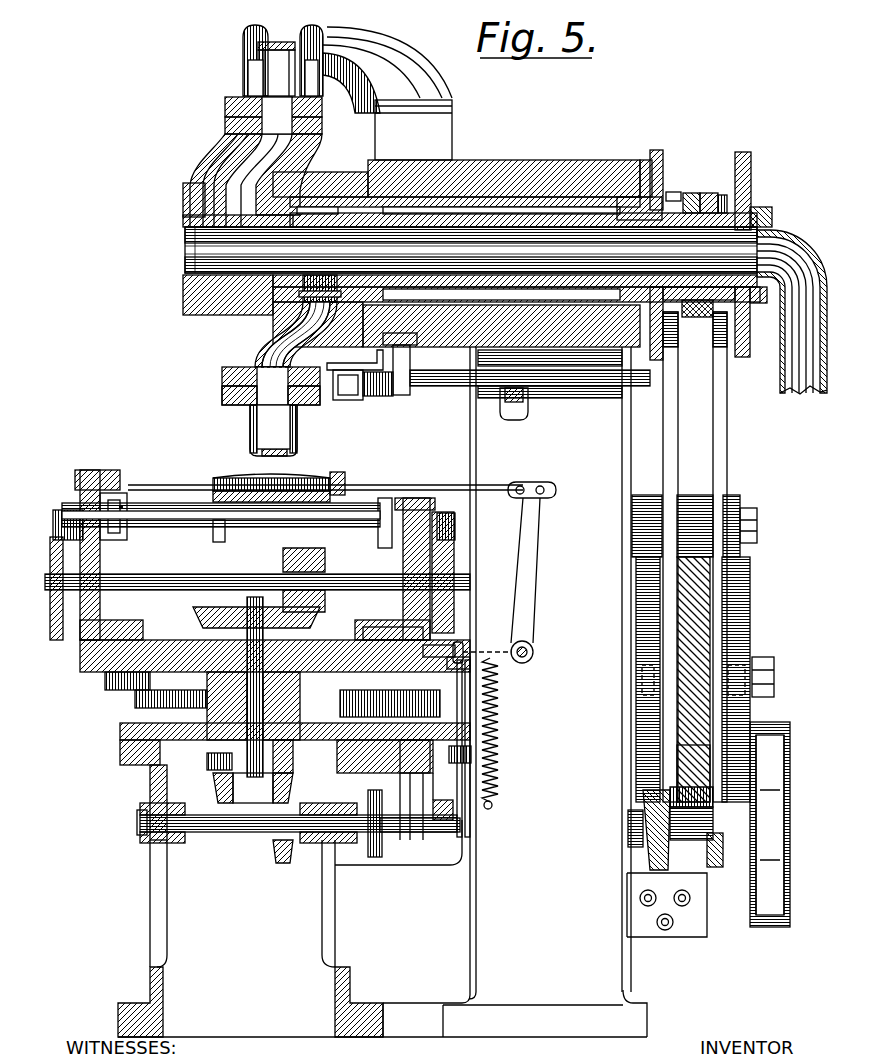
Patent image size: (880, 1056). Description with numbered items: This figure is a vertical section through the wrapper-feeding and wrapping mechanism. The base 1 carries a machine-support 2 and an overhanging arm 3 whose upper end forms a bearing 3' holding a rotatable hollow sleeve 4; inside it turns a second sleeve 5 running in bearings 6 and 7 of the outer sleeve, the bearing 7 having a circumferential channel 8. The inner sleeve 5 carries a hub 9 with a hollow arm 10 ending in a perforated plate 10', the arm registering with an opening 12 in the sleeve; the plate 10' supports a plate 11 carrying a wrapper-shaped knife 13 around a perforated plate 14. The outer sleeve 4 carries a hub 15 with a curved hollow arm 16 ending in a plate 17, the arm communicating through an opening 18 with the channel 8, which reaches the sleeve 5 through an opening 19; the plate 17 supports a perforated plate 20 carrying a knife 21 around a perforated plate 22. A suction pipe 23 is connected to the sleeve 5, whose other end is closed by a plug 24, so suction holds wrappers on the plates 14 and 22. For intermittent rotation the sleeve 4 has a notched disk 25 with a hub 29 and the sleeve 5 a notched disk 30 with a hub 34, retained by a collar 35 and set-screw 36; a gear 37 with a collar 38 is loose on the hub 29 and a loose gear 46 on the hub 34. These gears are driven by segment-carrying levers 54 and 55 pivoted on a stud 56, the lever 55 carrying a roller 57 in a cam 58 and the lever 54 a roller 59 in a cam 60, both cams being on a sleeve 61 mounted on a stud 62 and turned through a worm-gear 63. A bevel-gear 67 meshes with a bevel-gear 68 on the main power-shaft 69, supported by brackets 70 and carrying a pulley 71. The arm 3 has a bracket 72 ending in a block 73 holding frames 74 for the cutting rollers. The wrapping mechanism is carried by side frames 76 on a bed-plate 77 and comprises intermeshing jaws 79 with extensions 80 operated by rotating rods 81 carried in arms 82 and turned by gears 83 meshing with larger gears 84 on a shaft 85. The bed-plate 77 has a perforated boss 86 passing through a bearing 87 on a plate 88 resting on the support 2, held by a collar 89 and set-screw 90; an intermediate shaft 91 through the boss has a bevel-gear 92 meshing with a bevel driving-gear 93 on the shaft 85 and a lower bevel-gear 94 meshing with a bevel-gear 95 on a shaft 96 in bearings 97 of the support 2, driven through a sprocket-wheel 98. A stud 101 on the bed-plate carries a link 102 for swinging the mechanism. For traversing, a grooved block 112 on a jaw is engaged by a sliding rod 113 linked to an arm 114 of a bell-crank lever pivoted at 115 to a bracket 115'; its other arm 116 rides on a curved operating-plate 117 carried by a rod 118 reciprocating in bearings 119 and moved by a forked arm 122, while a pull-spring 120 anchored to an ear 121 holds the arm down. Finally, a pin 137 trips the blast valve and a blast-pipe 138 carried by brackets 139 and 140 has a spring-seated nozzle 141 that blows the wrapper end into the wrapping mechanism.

The base 1 is at (382, 692).
The machine-support 2 is at (150, 783).
The overhanging arm 3 is at (509, 648).
The bearing 3' is at (504, 157).
The hollow sleeve 4 is at (457, 198).
The second sleeve 5 is at (553, 215).
The bearing 6 is at (635, 197).
The bearing 7 is at (365, 207).
The circumferential groove or channel 8 is at (330, 209).
The hub 9 is at (183, 200).
The hollow arm 10 is at (242, 162).
The perforated plate 10' is at (245, 112).
The plate 11 is at (240, 100).
The opening 12 is at (183, 222).
The knife 13 is at (258, 60).
The perforated plate 14 is at (279, 42).
The hub 15 is at (323, 173).
The curved hollow arm 16 is at (270, 343).
The plate 17 is at (222, 375).
The opening 18 is at (296, 334).
The opening 19 is at (320, 282).
The perforated plate 20 is at (248, 402).
The knife 21 is at (297, 434).
The perforated plate 22 is at (273, 427).
The pipe 23 is at (793, 394).
The plug 24 is at (185, 254).
The notched disk 25 is at (663, 163).
The hub 29 is at (690, 317).
The notched disk 30 is at (745, 152).
The hub 34 is at (724, 195).
The collar 35 is at (768, 210).
The set-screw 36 is at (755, 303).
The gear 37 is at (674, 192).
The collar 38 is at (692, 193).
The loose gear 46 is at (719, 195).
The segment-carrying lever 54 is at (668, 422).
The segment-carrying lever 55 is at (724, 426).
The stud 56 is at (758, 529).
The roller 57 is at (748, 664).
The cam 58 is at (745, 618).
The roller 59 is at (640, 685).
The cam 60 is at (640, 632).
The sleeve 61 is at (670, 710).
The stud 62 is at (774, 676).
The worm-gear 63 is at (703, 752).
The bevel-gear 67 is at (712, 868).
The bevel-gear 68 is at (645, 856).
The shaft 69 is at (418, 834).
The brackets 70 is at (670, 862).
The pulley 71 is at (775, 830).
The bracket 72 is at (445, 105).
The block 73 is at (300, 42).
The frames 74 is at (322, 68).
The side frames 76 is at (100, 553).
The bed-plate 77 is at (80, 657).
The intermeshing jaws 79 is at (236, 478).
The extensions 80 is at (217, 541).
The rotating rods 81 is at (187, 528).
The arms 82 is at (127, 502).
The gears 83 is at (62, 513).
The larger gears 84 is at (50, 548).
The shaft 85 is at (243, 577).
The perforated boss 86 is at (307, 650).
The bearing 87 is at (303, 692).
The plate 88 is at (120, 731).
The collar 89 is at (338, 766).
The set-screw 90 is at (207, 764).
The intermediate shaft 91 is at (247, 643).
The bevel-gear 92 is at (200, 614).
The bevel driving-gear 93 is at (317, 556).
The bevel-gear 94 is at (218, 788).
The bevel-gear 95 is at (281, 863).
The shaft 96 is at (240, 832).
The bearings 97 is at (160, 844).
The sprocket-wheel 98 is at (380, 802).
The stud 101 is at (125, 690).
The link 102 is at (110, 675).
The grooved block 112 is at (337, 473).
The sliding rod 113 is at (457, 484).
The arm 114 is at (533, 578).
The pivot 115 is at (553, 641).
The bracket 115' is at (492, 617).
The arm 116 is at (495, 649).
The curved operating-plate 117 is at (432, 658).
The rod 118 is at (447, 663).
The bearings 119 is at (471, 708).
The pull-spring 120 is at (500, 746).
The ear 121 is at (492, 805).
The forked arm 122 is at (472, 756).
The pin 137 is at (353, 363).
The blast-pipe 138 is at (445, 393).
The bracket 139 is at (508, 420).
The bracket 140 is at (410, 362).
The spring-seated nozzle 141 is at (357, 398).